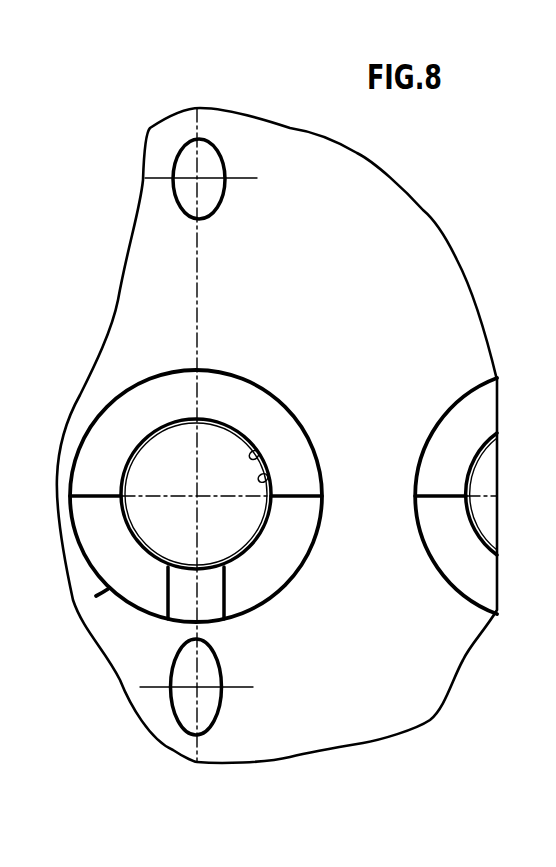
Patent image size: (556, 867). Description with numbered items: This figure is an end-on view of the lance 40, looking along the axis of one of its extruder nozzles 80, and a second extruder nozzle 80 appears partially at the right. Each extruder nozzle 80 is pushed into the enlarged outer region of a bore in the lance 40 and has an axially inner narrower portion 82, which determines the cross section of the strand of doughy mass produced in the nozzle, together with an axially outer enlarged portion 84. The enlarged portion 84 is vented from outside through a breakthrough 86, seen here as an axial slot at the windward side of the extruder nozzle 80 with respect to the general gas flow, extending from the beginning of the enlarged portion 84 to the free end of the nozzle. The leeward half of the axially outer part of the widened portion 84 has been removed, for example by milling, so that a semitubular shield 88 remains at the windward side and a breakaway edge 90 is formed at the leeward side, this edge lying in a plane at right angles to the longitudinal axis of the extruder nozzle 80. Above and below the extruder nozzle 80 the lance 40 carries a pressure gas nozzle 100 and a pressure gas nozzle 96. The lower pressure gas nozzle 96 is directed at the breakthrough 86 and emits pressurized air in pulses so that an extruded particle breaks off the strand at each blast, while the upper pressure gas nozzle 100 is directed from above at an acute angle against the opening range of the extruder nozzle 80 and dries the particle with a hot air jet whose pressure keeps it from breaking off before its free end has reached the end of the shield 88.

The lance 40 is at (313, 748).
The extruder nozzle 80 is at (428, 422).
The axially inner narrower portion 82 is at (267, 462).
The axially outer enlarged portion 84 is at (273, 482).
The breakthrough 86 is at (210, 608).
The semitubular shield 88 is at (108, 587).
The breakaway edge 90 is at (163, 423).
The pressure gas nozzle 96 is at (213, 715).
The pressure gas nozzle 100 is at (215, 193).